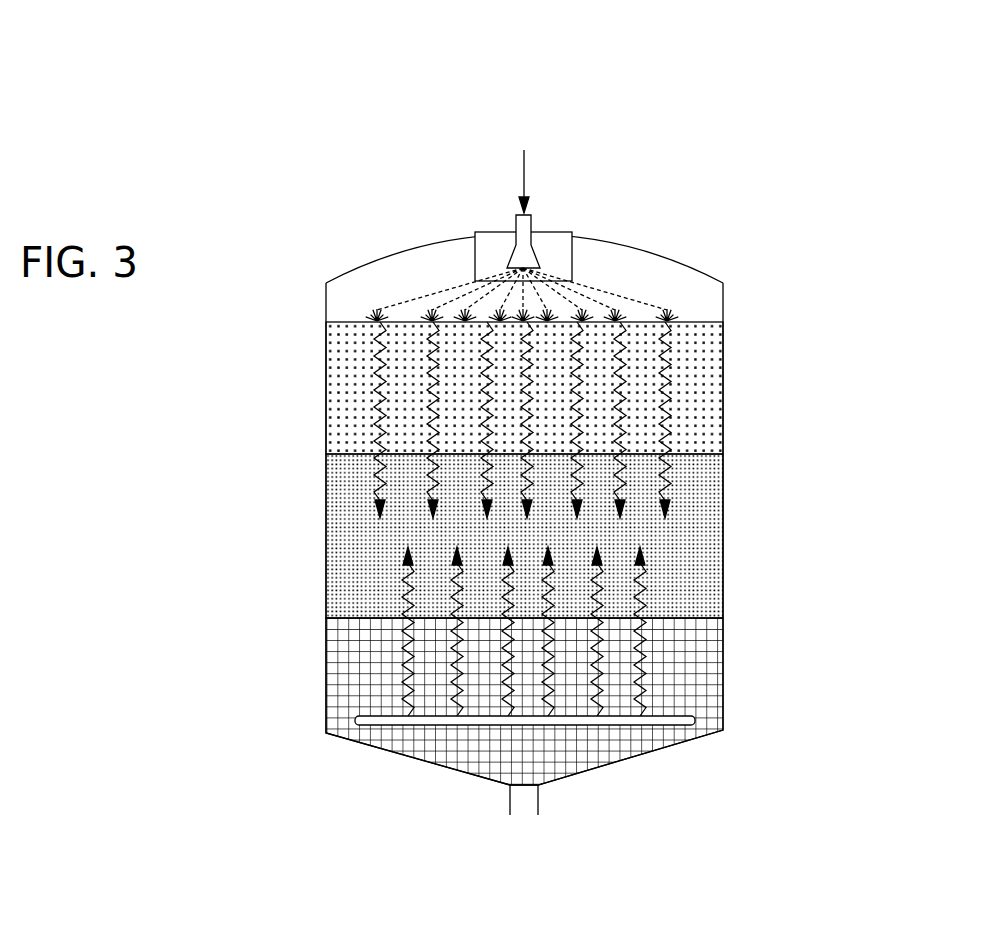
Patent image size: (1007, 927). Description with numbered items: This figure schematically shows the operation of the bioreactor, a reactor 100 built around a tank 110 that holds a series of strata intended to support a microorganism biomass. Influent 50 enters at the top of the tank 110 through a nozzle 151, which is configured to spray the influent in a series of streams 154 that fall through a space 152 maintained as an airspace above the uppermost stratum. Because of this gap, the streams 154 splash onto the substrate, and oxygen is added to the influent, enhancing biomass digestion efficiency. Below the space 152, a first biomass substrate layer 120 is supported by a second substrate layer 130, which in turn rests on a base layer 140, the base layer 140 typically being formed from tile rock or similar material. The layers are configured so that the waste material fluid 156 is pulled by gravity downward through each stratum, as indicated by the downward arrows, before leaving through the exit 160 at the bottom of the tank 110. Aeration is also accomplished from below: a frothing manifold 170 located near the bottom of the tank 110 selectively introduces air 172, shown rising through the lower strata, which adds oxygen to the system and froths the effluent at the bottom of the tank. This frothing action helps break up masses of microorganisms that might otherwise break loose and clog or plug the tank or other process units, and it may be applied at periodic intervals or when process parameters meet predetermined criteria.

The reactor 100 is at (266, 128).
The feed stream 50 is at (530, 162).
The nozzle 151 is at (505, 221).
The space 152 is at (640, 258).
The streams 154 is at (437, 298).
The first biomass substrate layer 120 is at (693, 363).
The waste material fluid 156 is at (380, 405).
The tank 110 is at (326, 488).
The second substrate layer 130 is at (722, 478).
The air 172 is at (397, 595).
The base layer 140 is at (705, 645).
The frothing manifold 170 is at (672, 724).
The exit 160 is at (525, 810).